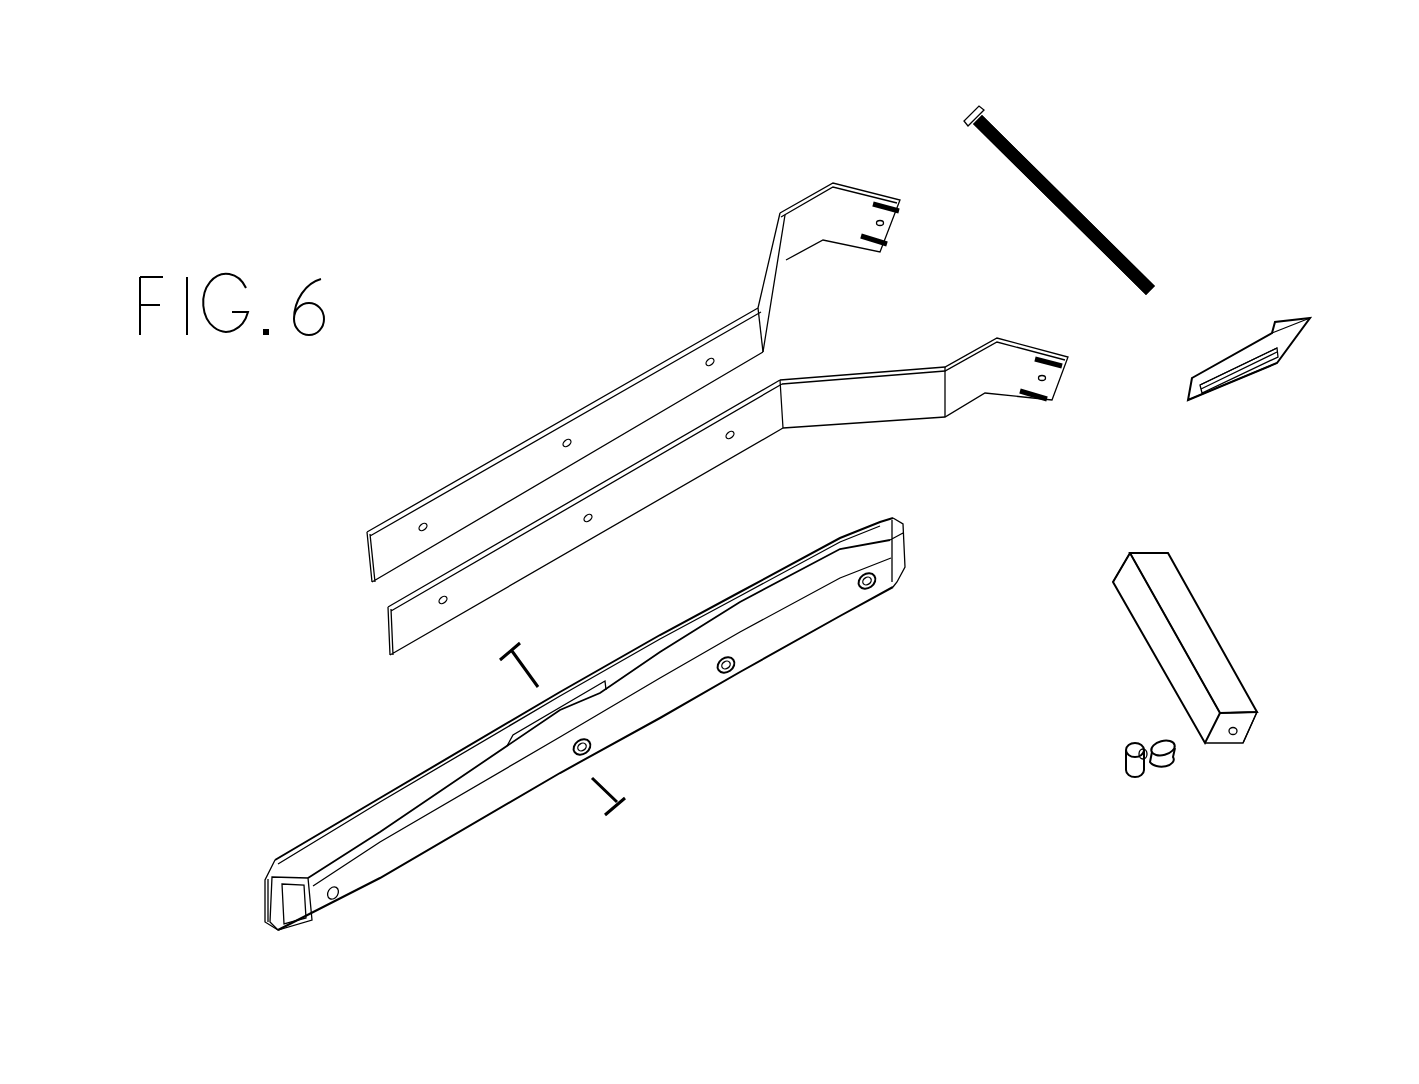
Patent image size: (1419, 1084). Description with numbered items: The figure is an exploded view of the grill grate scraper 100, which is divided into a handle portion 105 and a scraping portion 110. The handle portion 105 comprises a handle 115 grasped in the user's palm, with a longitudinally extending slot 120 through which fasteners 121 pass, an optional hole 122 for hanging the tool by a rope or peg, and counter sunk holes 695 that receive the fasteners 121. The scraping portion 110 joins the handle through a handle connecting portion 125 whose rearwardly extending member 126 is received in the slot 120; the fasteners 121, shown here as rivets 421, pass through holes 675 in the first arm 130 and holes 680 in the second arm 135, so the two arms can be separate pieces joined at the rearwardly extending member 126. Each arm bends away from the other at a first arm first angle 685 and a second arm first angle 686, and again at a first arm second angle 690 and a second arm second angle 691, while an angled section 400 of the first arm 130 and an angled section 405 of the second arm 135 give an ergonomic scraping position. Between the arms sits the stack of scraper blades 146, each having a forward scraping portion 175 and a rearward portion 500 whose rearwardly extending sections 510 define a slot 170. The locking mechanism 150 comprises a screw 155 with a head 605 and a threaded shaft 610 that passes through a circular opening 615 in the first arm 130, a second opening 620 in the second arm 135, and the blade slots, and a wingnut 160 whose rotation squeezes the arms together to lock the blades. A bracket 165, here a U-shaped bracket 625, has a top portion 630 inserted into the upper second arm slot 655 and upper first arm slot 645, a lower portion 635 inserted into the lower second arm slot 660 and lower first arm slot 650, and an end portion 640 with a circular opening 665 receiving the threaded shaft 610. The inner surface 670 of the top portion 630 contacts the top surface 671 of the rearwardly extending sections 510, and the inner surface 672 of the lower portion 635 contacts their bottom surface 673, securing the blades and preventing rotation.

The grill grate scraper 100 is at (497, 200).
The handle portion 105 is at (327, 465).
The scraping portion 110 is at (845, 102).
The handle 115 is at (395, 770).
The longitudinally extending slot 120 is at (808, 570).
The fasteners 121 is at (730, 815).
The hole 122 is at (338, 896).
The handle connecting portion 125 is at (660, 300).
The rearwardly extending member 126 is at (577, 355).
The first arm 130 is at (703, 222).
The second arm 135 is at (965, 472).
The scraper blades 146 is at (1282, 290).
The locking mechanism 150 is at (855, 155).
The screw 155 is at (1090, 190).
The wingnut 160 is at (1118, 795).
The bracket 165 is at (1218, 580).
The slot 170 is at (1213, 388).
The scraping portion 175 is at (1318, 338).
The angled section 400 is at (818, 240).
The angled section 405 is at (985, 393).
The rivets 421 is at (530, 660).
The rearward portion 500 is at (1275, 402).
The rearwardly extending sections 510 is at (1225, 365).
The head 605 is at (984, 112).
The threaded shaft 610 is at (1150, 288).
The circular opening 615 is at (884, 223).
The second opening 620 is at (1047, 378).
The U-shaped bracket 625 is at (1075, 660).
The top portion 630 is at (1205, 627).
The lower portion 635 is at (1124, 598).
The end portion 640 is at (1245, 738).
The upper first arm slot 645 is at (898, 205).
The lower first arm slot 650 is at (889, 241).
The upper second arm slot 655 is at (1063, 359).
The lower second arm slot 660 is at (1050, 398).
The circular opening 665 is at (1240, 726).
The inner surface 670 is at (1128, 567).
The top surface 671 is at (1238, 352).
The inner surface 672 is at (1183, 686).
The bottom surface 673 is at (1280, 367).
The holes 675 is at (425, 523).
The holes 680 is at (447, 600).
The first arm first angle 685 is at (758, 308).
The second arm first angle 686 is at (783, 428).
The first arm second angle 690 is at (780, 213).
The second arm second angle 691 is at (945, 405).
The counter sunk holes 695 is at (864, 590).